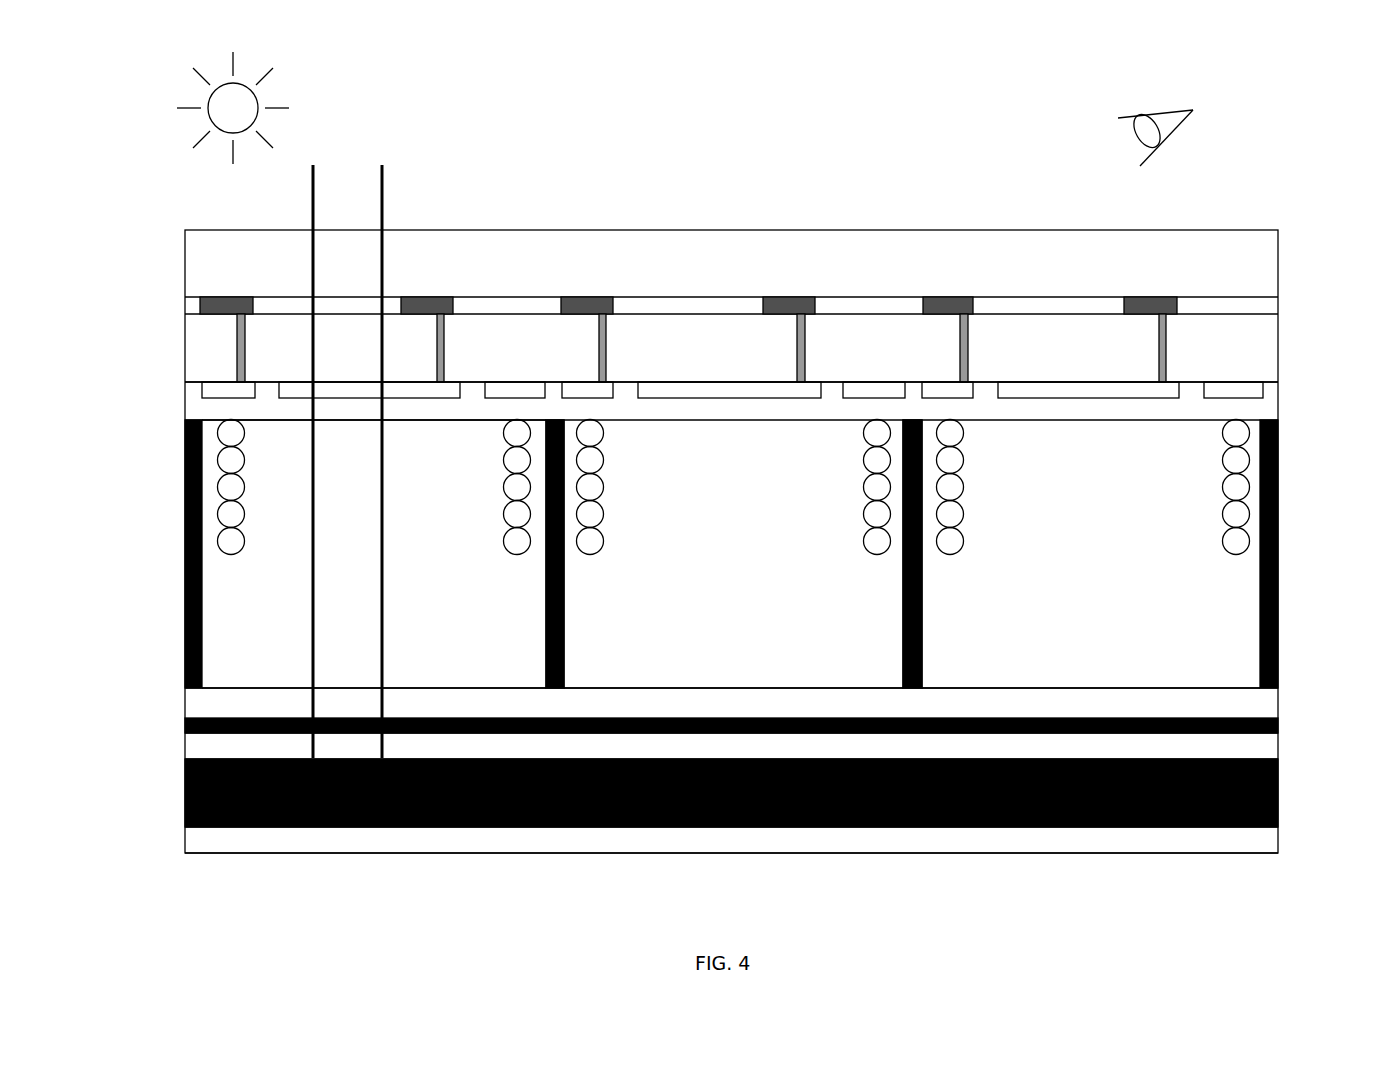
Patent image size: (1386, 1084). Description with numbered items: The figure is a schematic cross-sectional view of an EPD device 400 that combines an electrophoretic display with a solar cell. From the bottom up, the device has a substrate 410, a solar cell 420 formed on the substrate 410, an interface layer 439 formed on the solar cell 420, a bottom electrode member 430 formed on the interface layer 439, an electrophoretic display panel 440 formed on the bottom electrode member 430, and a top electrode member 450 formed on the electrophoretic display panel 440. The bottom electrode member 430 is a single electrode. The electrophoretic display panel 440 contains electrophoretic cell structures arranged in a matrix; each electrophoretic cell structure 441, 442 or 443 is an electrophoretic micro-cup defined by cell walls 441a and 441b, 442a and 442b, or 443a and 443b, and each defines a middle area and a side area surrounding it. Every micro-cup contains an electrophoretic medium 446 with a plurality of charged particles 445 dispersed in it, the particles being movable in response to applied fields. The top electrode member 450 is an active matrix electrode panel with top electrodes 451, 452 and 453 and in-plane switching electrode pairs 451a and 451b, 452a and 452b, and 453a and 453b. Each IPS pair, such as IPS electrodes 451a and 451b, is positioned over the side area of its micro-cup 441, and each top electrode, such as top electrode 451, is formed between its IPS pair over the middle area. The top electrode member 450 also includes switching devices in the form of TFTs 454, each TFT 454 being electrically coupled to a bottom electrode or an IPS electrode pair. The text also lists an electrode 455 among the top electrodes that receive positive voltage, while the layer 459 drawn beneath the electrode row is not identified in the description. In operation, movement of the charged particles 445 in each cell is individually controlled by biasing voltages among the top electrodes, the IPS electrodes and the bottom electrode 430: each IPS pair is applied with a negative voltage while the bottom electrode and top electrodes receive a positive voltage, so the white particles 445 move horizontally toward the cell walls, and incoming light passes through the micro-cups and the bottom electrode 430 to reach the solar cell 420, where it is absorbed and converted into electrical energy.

The EPD device 400 is at (767, 91).
The substrate 410 is at (1260, 840).
The solar cell 420 is at (1290, 761).
The bottom electrode member 430 is at (1282, 724).
The interface layer 439 is at (1268, 748).
The electrophoretic display panel 440 is at (1290, 422).
The electrophoretic cell structure 441 is at (417, 610).
The cell wall 441a is at (185, 601).
The cell wall 441b is at (546, 600).
The electrophoretic cell structure 442 is at (750, 617).
The cell wall 442a is at (523, 554).
The cell wall 442b is at (903, 600).
The electrophoretic cell structure 443 is at (1158, 617).
The cell wall 443a is at (881, 554).
The cell wall 443b is at (1260, 622).
The charged particles 445 is at (233, 488).
The electrophoretic medium 446 is at (264, 668).
The top electrode member 450 is at (1290, 232).
The top electrode 451 is at (410, 392).
The IPS electrode 451a is at (218, 392).
The IPS electrode 451b is at (508, 392).
The top electrode 452 is at (731, 392).
The IPS electrode 452a is at (587, 392).
The IPS electrode 452b is at (877, 392).
The top electrode 453 is at (1088, 392).
The IPS electrode 453a is at (947, 392).
The IPS electrode 453b is at (1236, 392).
The TFT 454 is at (789, 310).
The top electrode 455 is at (1279, 393).
The insulating layer 459 is at (1265, 410).